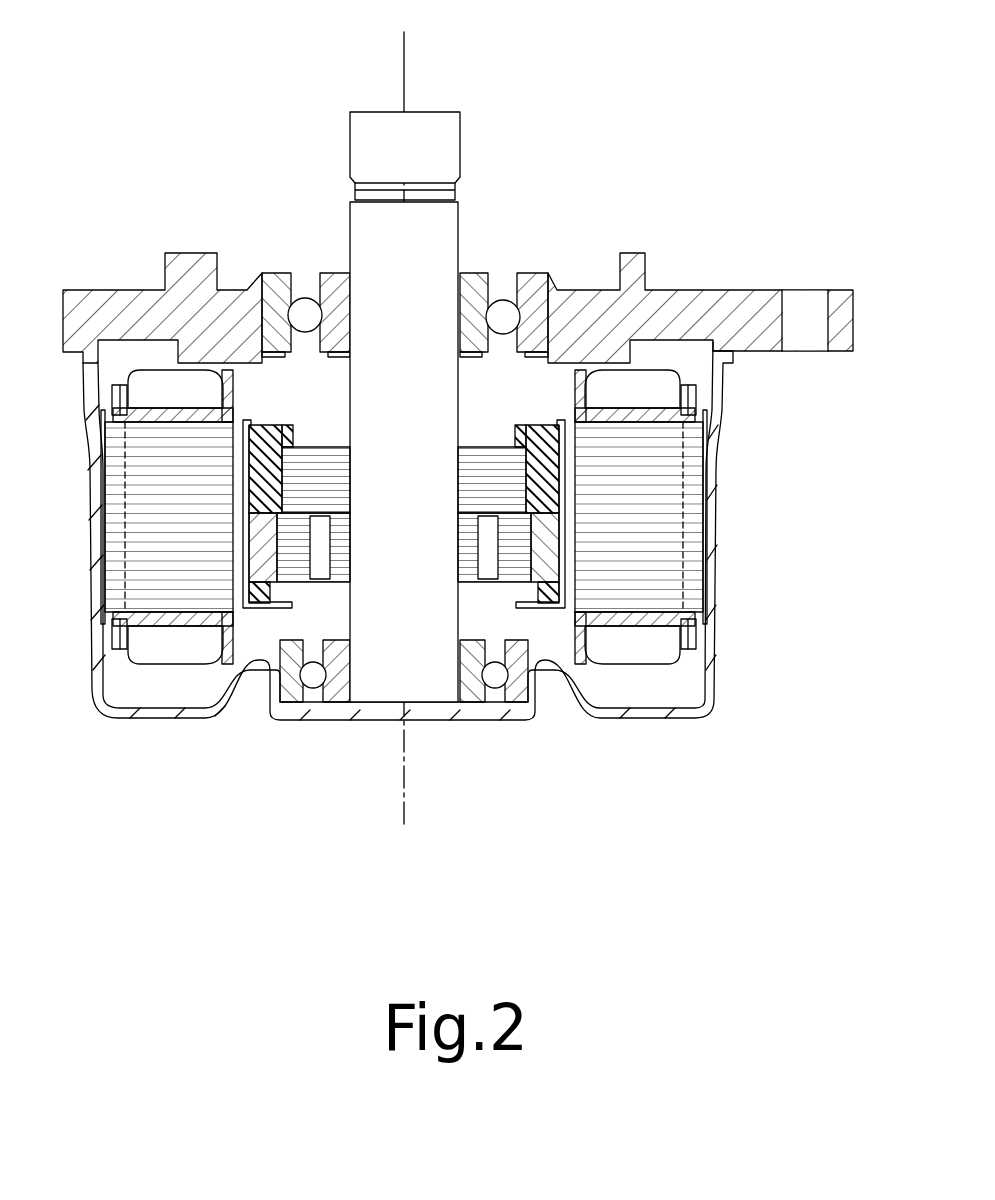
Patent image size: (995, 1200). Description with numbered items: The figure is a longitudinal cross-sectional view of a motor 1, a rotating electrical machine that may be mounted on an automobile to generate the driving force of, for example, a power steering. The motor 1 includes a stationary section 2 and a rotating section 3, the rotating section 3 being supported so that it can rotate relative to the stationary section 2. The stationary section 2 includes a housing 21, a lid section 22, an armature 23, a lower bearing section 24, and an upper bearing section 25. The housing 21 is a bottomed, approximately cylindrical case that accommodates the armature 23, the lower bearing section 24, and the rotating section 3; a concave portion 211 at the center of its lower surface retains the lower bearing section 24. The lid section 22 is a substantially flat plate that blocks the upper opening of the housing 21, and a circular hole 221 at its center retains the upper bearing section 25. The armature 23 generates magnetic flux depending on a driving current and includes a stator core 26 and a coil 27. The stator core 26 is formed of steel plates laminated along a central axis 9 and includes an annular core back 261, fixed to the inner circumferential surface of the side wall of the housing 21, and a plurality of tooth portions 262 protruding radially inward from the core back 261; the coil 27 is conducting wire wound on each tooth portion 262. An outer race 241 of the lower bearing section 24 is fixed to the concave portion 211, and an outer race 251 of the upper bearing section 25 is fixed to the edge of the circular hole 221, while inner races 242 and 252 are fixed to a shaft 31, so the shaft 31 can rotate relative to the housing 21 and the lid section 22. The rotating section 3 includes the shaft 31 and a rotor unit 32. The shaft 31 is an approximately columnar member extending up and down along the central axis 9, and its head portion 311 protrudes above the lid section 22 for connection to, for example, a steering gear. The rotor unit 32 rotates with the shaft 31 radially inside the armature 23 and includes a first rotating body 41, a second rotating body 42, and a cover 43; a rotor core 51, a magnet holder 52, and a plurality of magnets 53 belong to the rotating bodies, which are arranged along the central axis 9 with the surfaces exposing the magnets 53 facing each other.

The motor 1 is at (174, 106).
The stationary section 2 is at (772, 272).
The rotating section 3 is at (276, 394).
The central axis 9 is at (402, 71).
The housing 21 is at (408, 565).
The lid section 22 is at (458, 286).
The armature 23 is at (378, 625).
The lower bearing section 24 is at (395, 732).
The upper bearing section 25 is at (393, 258).
The stator core 26 is at (378, 622).
The coil 27 is at (178, 650).
The shaft 31 is at (434, 399).
The rotor unit 32 is at (446, 587).
The first rotating body 41 is at (508, 604).
The second rotating body 42 is at (504, 420).
The cover 43 is at (535, 513).
The rotor core 51 is at (298, 467).
The magnet holder 52 is at (250, 491).
The magnets 53 is at (543, 552).
The concave portion 211 is at (535, 697).
The circular hole 221 is at (533, 300).
The outer race 241 is at (290, 685).
The inner race 242 is at (338, 685).
The outer race 251 is at (266, 292).
The inner race 252 is at (390, 278).
The core back 261 is at (105, 575).
The tooth portions 262 is at (160, 565).
The head portion 311 is at (435, 143).